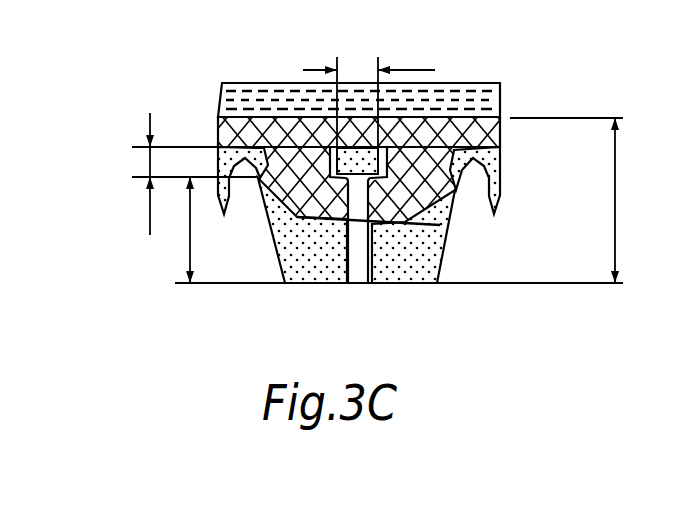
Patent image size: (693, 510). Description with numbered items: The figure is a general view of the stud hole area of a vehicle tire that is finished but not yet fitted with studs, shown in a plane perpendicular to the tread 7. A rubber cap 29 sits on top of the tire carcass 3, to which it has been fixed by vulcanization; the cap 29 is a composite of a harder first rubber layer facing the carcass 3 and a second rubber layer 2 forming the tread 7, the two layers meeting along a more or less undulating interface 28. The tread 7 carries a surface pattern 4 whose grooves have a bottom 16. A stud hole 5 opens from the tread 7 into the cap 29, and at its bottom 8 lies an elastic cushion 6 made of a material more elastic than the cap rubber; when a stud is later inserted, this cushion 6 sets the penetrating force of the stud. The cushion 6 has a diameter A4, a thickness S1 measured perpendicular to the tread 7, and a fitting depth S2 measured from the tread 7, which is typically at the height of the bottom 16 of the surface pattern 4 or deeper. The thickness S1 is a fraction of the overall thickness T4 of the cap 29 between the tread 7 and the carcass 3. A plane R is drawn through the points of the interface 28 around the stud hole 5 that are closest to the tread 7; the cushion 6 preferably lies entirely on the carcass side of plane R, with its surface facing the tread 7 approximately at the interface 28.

The second rubber layer 2 is at (306, 283).
The tire carcass 3 is at (278, 83).
The surface pattern 4 is at (472, 268).
The stud hole 5 is at (358, 253).
The elastic cushion 6 is at (297, 217).
The tread 7 is at (418, 296).
The bottom of stud hole 8 is at (401, 159).
The bottom of the surface pattern 16 is at (470, 190).
The interface between first and second rubber layer 28 is at (500, 127).
The cap 29 is at (206, 125).
The plane R is at (411, 237).
The thickness of elastic cushion S1 is at (184, 174).
The fitting depth S2 is at (174, 230).
The overall thickness of the rubber cap T4 is at (582, 200).
The diameter of the elastic cushion A4 is at (372, 93).